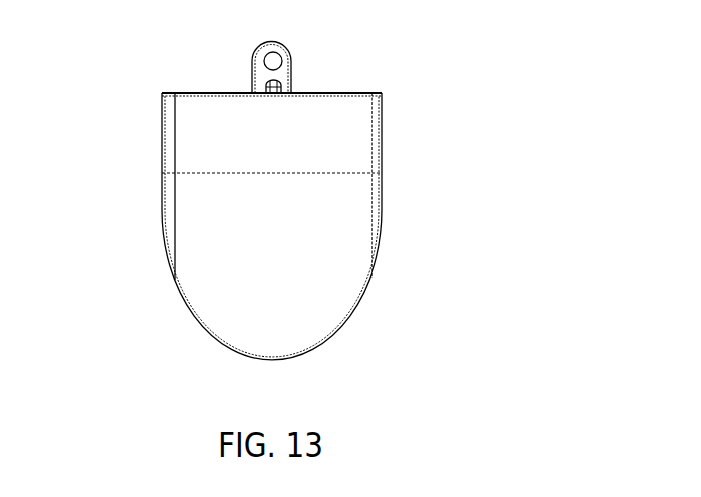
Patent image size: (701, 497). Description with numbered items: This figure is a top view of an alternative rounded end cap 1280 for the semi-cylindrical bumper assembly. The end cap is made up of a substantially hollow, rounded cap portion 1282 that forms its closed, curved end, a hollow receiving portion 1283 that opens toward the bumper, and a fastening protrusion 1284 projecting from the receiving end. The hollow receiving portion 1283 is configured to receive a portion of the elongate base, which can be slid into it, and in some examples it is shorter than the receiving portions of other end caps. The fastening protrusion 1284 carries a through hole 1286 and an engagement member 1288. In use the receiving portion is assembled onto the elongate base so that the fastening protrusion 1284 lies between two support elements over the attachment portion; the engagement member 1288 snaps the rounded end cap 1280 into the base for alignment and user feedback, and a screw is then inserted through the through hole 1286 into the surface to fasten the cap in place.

The rounded end cap 1280 is at (471, 138).
The rounded cap portion 1282 is at (328, 304).
The hollow receiving portion 1283 is at (323, 93).
The fastening protrusion 1284 is at (253, 53).
The through hole 1286 is at (268, 60).
The engagement member 1288 is at (281, 82).